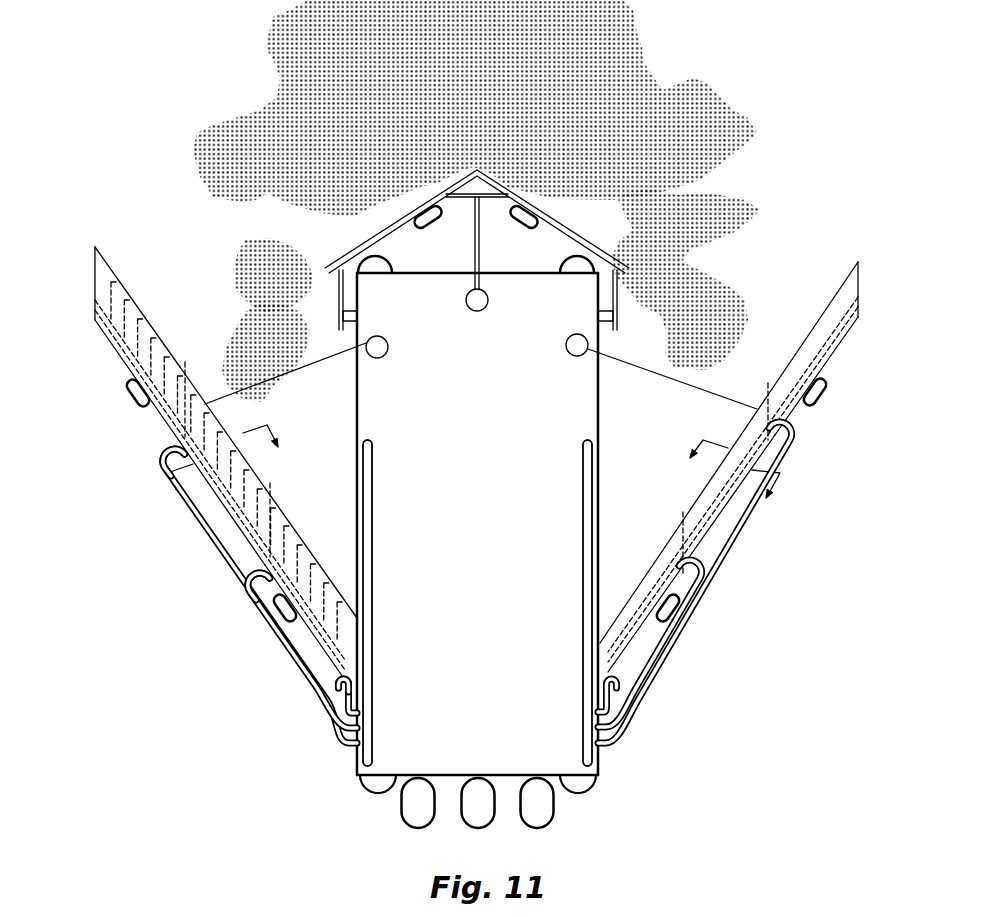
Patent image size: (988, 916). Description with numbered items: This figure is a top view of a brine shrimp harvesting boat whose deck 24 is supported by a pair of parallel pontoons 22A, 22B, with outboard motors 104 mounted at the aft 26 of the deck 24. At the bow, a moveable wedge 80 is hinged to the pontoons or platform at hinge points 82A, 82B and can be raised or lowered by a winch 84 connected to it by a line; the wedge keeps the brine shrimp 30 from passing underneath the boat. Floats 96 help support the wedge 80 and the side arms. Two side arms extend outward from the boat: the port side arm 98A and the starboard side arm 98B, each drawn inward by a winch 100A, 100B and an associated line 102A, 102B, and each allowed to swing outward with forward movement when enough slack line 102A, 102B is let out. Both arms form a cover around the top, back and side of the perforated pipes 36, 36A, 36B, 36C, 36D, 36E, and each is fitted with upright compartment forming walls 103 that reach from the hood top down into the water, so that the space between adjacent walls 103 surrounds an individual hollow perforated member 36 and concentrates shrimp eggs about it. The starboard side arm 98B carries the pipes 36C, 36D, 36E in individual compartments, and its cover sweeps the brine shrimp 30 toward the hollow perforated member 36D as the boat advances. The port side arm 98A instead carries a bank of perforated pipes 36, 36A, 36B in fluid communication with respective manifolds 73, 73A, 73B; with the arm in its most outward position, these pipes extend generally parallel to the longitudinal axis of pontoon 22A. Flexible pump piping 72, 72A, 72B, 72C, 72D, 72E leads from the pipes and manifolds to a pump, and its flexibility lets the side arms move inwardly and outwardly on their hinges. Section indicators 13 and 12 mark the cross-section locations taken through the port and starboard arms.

The brine shrimp 30 is at (648, 48).
The moveable bow wedge 80 is at (552, 212).
The winch 84 is at (482, 311).
The hinge point 82A is at (350, 304).
The hinge point 82B is at (598, 316).
The float 96 is at (433, 225).
The platform or deck 24 is at (484, 535).
The aft portion 26 is at (357, 775).
The pontoon 22A is at (370, 792).
The pontoon 22B is at (592, 786).
The outboard motor 104 is at (543, 814).
The winch 100A is at (381, 358).
The winch 100B is at (574, 356).
The line 102A is at (326, 358).
The line 102B is at (632, 360).
The port side arm 98A is at (88, 287).
The starboard side arm 98B is at (866, 283).
The hollow perforated member 36 is at (298, 550).
The hollow perforated member 36A is at (208, 420).
The hollow perforated member 36B is at (118, 278).
The hollow perforated member 36C is at (643, 617).
The hollow perforated member 36D is at (743, 447).
The hollow perforated member 36E is at (820, 347).
The compartment forming wall 103 is at (95, 248).
The section line 13 is at (234, 468).
The section line 12 is at (722, 482).
The pump piping 72 is at (340, 700).
The pump piping 72A is at (246, 592).
The pump piping 72B is at (153, 474).
The pump piping 72C is at (617, 692).
The pump piping 72D is at (710, 575).
The pump piping 72E is at (805, 453).
The manifold 73 is at (340, 676).
The manifold 73A is at (240, 526).
The manifold 73B is at (116, 345).